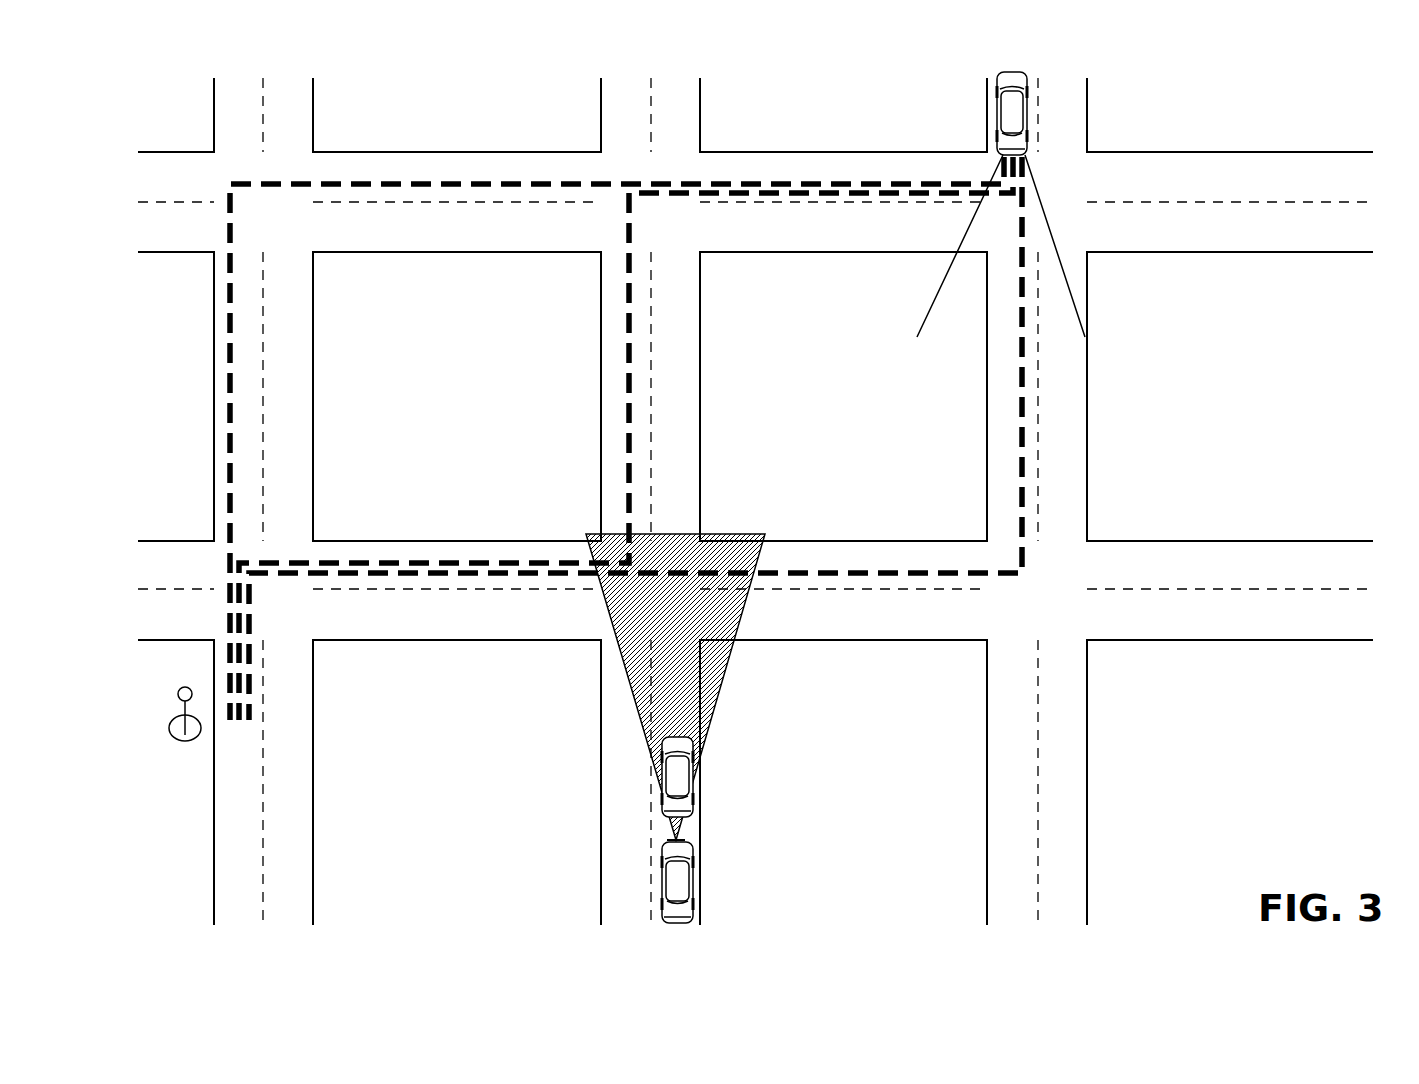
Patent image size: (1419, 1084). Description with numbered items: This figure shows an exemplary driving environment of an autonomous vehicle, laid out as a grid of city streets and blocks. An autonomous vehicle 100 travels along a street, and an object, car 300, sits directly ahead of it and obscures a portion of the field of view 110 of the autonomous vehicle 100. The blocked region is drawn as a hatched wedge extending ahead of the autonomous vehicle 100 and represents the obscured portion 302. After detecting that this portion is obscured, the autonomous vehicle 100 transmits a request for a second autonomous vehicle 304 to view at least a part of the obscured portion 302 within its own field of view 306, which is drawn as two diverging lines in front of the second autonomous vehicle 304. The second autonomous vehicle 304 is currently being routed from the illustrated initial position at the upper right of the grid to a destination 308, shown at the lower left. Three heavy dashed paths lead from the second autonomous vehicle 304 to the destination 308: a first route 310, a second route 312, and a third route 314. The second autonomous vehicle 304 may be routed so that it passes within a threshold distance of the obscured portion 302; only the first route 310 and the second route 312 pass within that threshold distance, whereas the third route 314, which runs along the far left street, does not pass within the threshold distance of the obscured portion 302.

The autonomous vehicle 100 is at (699, 897).
The field of view 110 is at (692, 832).
The car 300 is at (709, 777).
The obscured portion 302 is at (675, 687).
The second autonomous vehicle 304 is at (1036, 127).
The field of view 306 is at (1060, 222).
The destination 308 is at (184, 750).
The first route 310 is at (1015, 449).
The second route 312 is at (622, 366).
The third route 314 is at (242, 355).